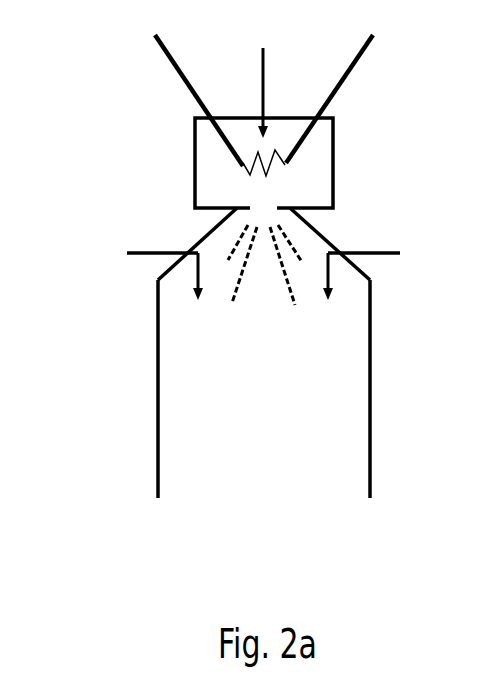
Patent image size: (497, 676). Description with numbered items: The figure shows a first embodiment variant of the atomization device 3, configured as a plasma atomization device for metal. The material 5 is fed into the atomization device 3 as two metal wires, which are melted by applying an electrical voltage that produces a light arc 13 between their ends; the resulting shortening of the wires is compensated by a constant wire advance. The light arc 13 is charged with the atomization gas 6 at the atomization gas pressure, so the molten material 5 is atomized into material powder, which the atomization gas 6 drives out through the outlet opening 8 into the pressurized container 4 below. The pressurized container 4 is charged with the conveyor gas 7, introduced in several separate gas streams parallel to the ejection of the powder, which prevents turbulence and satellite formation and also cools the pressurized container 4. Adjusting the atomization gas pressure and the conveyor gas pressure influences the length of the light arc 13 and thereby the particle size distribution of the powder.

The atomization device 3 is at (130, 160).
The pressurized container 4 is at (134, 407).
The material 5 is at (197, 90).
The atomization gas 6 is at (258, 70).
The conveyor gas 7 is at (323, 255).
The outlet opening 8 is at (284, 190).
The light arc 13 is at (240, 148).